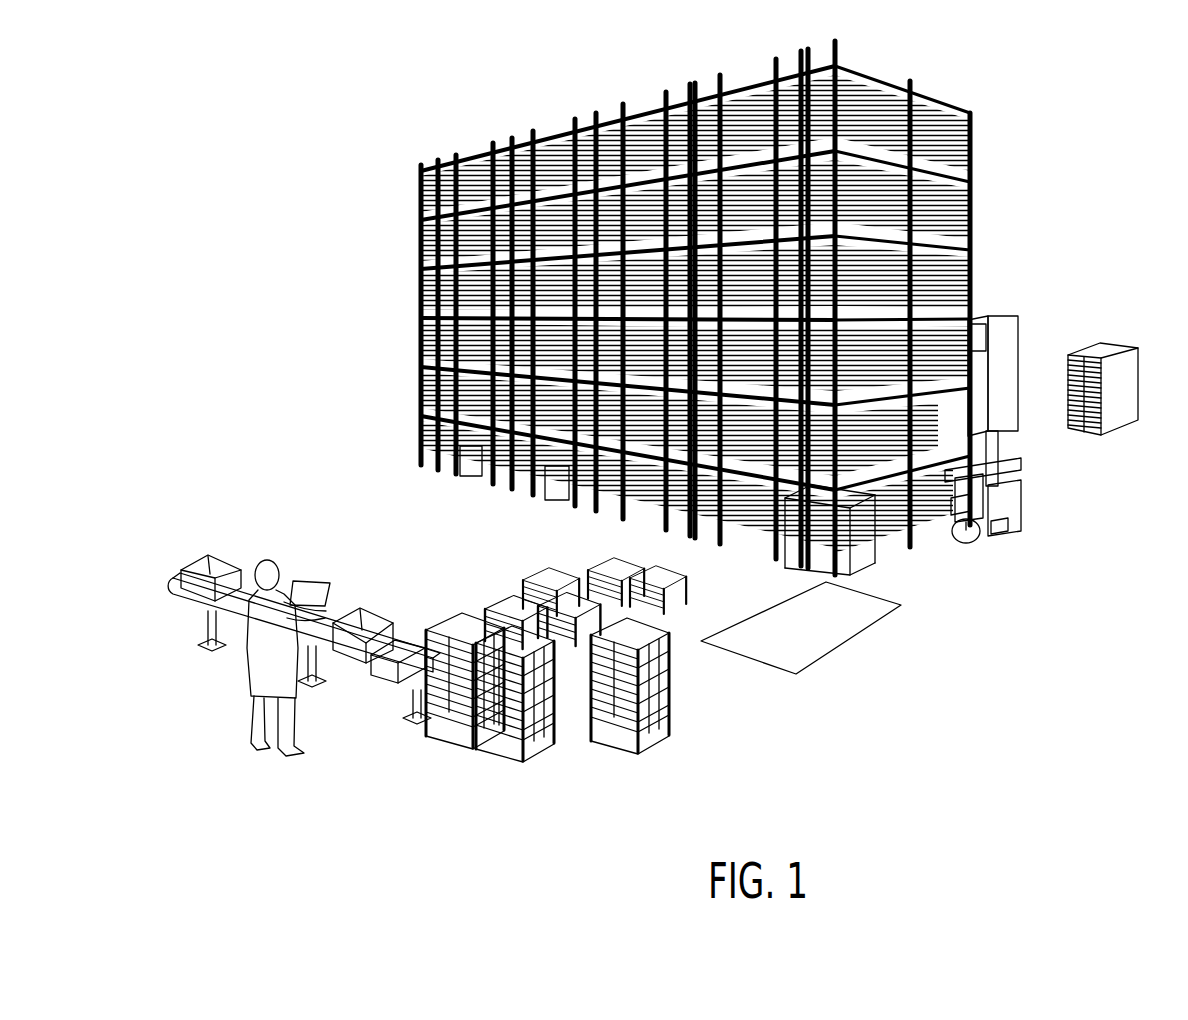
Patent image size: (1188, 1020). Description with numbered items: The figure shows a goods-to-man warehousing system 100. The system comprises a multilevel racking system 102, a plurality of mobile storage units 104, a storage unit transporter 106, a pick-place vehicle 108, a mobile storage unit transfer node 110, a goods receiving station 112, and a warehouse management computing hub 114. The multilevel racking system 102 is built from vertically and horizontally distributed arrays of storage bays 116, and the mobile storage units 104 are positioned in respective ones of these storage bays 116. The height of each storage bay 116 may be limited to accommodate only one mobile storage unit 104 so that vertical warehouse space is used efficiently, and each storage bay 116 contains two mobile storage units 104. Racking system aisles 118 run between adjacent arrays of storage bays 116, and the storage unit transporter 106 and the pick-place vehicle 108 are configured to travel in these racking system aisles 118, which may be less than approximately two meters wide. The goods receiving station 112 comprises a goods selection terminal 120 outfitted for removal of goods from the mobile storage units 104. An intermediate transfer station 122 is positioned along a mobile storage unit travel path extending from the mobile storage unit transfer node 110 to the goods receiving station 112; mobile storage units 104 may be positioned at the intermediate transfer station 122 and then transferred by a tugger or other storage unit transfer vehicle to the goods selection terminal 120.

The goods-to-man warehousing system 100 is at (198, 196).
The multilevel racking system 102 is at (378, 155).
The mobile storage unit 104 is at (645, 663).
The storage unit transporter 106 is at (647, 713).
The pick-place vehicle 108 is at (990, 332).
The mobile storage unit transfer node 110 is at (965, 523).
The goods receiving station 112 is at (538, 786).
The warehouse management computing hub 114 is at (1113, 380).
The storage bay 116 is at (837, 470).
The racking system aisle 118 is at (470, 468).
The goods selection terminal 120 is at (178, 776).
The intermediate transfer station 122 is at (825, 627).